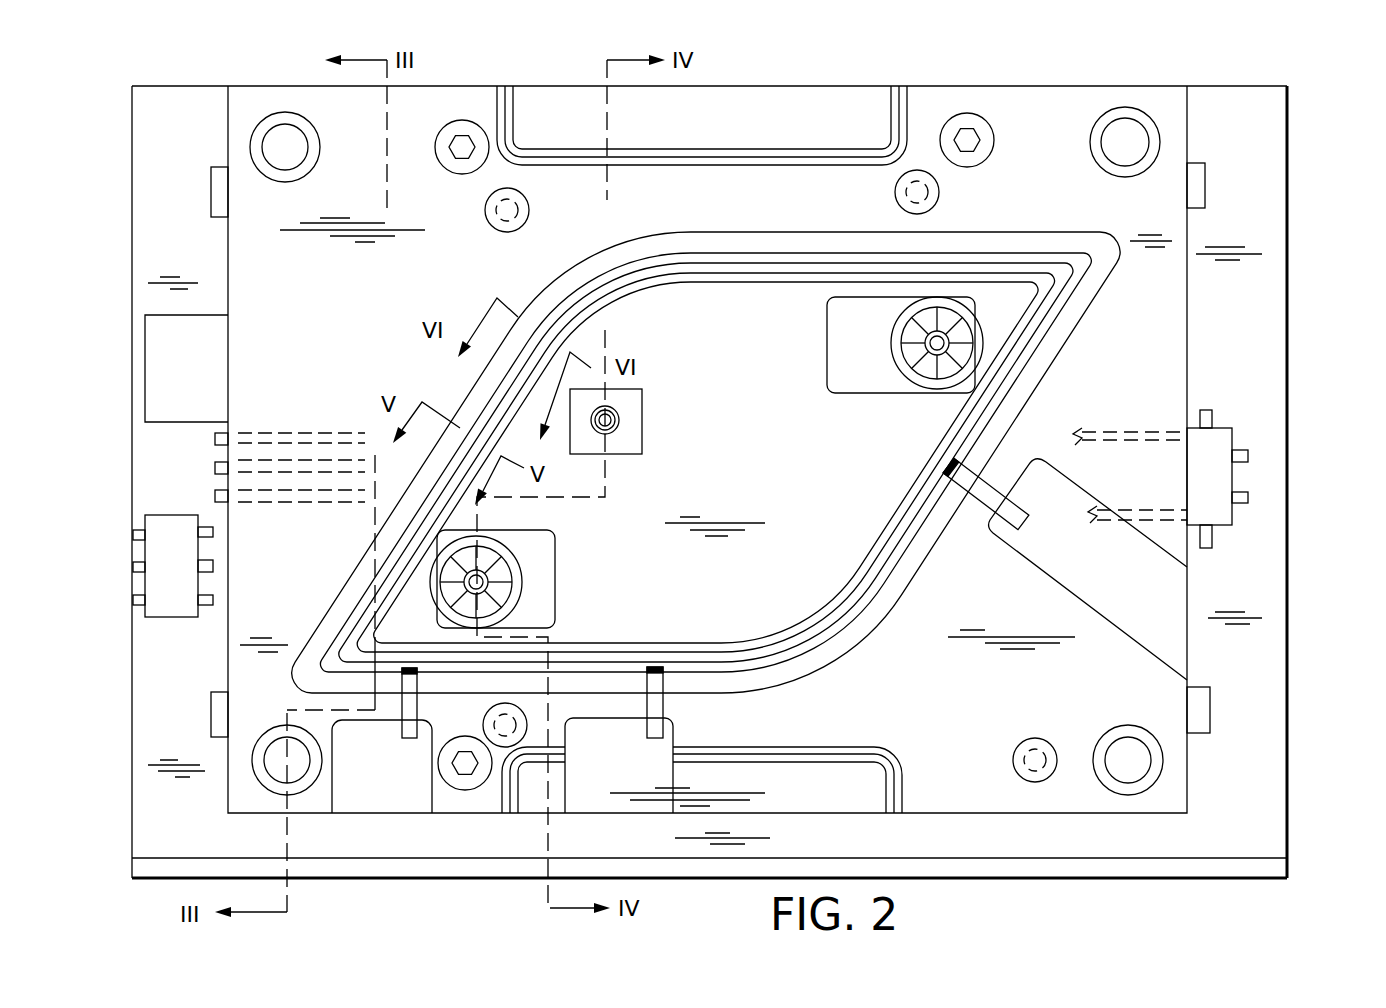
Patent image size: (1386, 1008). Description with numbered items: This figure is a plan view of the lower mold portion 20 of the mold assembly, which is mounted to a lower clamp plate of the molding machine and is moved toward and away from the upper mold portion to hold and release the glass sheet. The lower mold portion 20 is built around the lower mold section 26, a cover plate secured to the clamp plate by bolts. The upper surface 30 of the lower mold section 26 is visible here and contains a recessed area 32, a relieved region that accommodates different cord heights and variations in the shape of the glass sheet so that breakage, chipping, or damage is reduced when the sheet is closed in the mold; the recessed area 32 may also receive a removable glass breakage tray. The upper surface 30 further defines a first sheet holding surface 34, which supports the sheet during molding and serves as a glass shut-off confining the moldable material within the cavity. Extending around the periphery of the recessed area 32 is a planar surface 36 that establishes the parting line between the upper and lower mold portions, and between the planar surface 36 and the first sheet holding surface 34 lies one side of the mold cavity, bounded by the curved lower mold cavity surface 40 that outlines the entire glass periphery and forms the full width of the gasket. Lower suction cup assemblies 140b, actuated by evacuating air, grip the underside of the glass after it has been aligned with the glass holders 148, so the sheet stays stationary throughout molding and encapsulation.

The lower mold portion 20 is at (1308, 250).
The lower mold section 26 is at (1165, 372).
The upper surface 30 is at (1033, 694).
The recessed area 32 is at (730, 461).
The first sheet holding surface 34 is at (812, 640).
The planar surface 36 is at (1028, 402).
The lower mold cavity surface 40 is at (855, 625).
The lower suction cup assembly 140b is at (505, 528).
The glass holder 148 is at (400, 705).